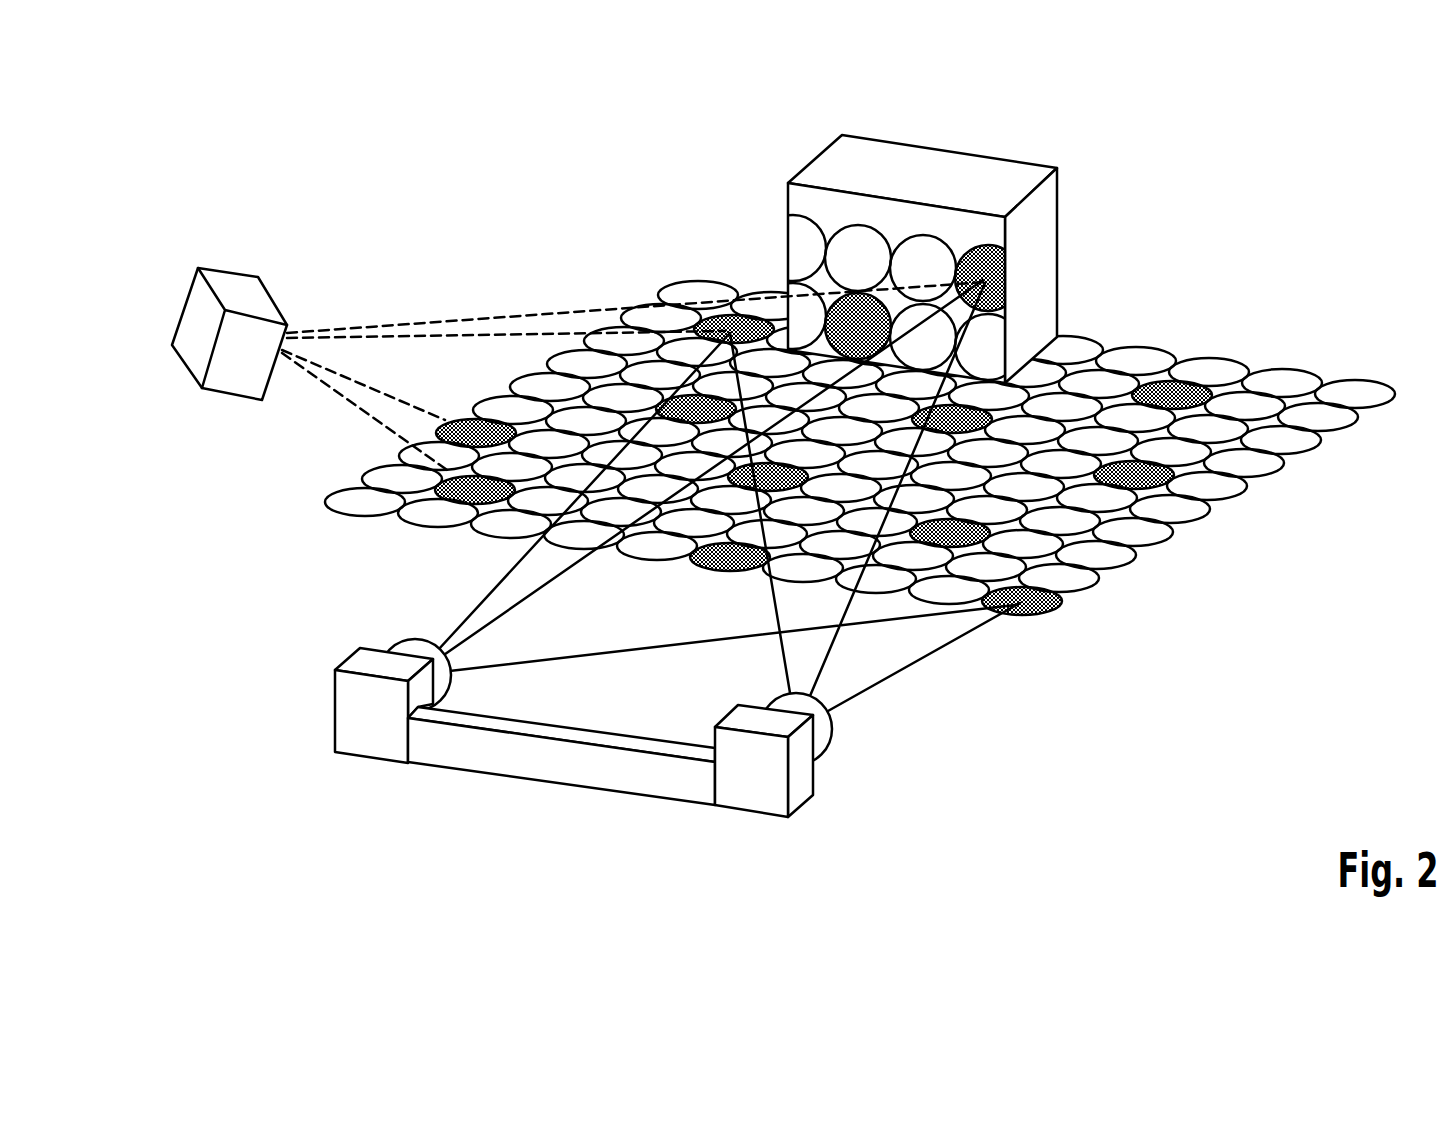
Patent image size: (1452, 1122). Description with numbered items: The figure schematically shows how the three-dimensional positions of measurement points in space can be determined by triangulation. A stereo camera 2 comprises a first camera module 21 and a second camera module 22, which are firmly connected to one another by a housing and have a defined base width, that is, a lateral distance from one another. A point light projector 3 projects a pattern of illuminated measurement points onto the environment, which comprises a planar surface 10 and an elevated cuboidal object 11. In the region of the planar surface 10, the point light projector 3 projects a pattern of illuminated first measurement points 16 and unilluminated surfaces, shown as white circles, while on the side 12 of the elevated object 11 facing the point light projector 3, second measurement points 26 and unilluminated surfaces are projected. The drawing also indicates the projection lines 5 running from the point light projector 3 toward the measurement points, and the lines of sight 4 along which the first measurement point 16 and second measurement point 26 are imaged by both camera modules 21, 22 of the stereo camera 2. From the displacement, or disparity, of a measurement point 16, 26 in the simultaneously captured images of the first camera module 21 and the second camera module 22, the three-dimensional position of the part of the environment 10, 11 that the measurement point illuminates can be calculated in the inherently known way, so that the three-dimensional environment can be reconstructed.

The stereo camera 2 is at (538, 782).
The point light projector 3 is at (197, 322).
The light beams 4 is at (765, 608).
The viewing lines 5 is at (473, 337).
The planar surface 10 is at (1235, 523).
The elevated cuboidal object 11 is at (935, 239).
The side of the elevated object 12 is at (853, 239).
The first measurement point 16 is at (718, 316).
The first camera module 21 is at (402, 645).
The second camera module 22 is at (822, 742).
The second measurement point 26 is at (980, 243).